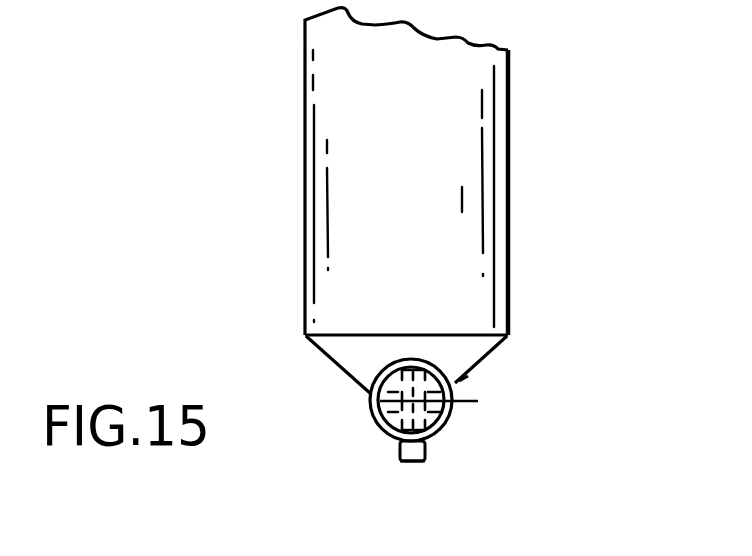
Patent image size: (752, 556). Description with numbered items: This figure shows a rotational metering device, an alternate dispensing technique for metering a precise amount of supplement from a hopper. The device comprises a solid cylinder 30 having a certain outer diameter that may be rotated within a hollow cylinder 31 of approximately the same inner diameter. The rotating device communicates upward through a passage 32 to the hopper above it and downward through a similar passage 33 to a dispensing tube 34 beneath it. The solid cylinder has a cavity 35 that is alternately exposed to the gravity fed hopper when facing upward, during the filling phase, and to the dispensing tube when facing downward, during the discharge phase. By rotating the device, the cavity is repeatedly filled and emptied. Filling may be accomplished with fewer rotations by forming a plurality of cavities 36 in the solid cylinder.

The solid cylinder 30 is at (372, 400).
The hollow cylinder 31 is at (448, 432).
The passage 32 is at (432, 360).
The passage 33 is at (427, 442).
The dispensing tube 34 is at (423, 462).
The cavity 35 is at (462, 382).
The plurality of cavities 36 is at (378, 428).